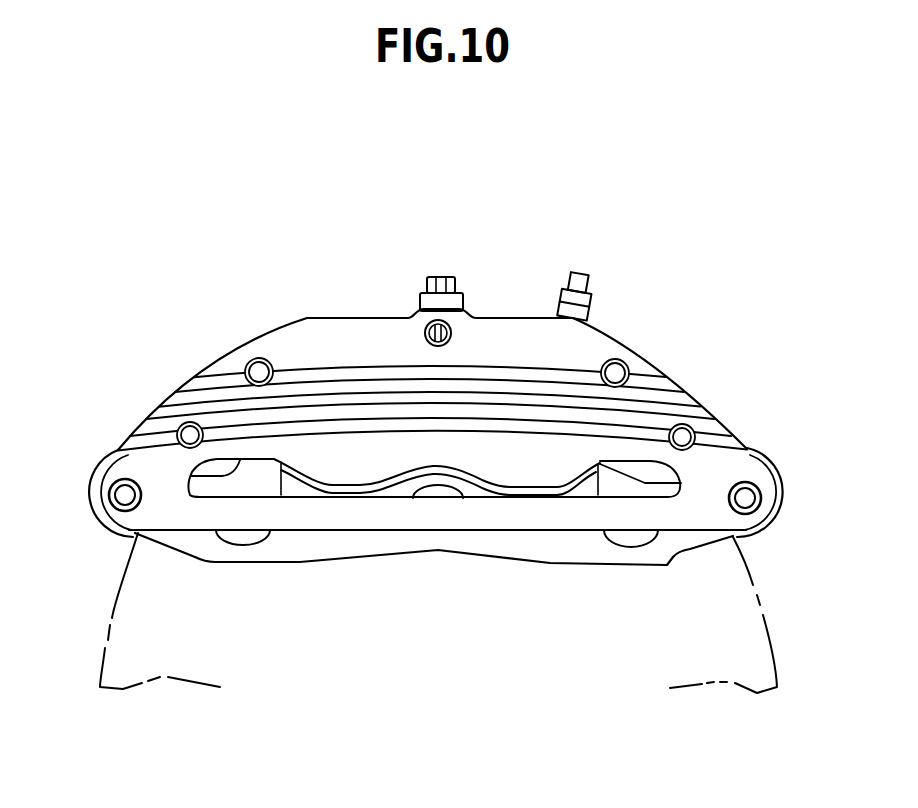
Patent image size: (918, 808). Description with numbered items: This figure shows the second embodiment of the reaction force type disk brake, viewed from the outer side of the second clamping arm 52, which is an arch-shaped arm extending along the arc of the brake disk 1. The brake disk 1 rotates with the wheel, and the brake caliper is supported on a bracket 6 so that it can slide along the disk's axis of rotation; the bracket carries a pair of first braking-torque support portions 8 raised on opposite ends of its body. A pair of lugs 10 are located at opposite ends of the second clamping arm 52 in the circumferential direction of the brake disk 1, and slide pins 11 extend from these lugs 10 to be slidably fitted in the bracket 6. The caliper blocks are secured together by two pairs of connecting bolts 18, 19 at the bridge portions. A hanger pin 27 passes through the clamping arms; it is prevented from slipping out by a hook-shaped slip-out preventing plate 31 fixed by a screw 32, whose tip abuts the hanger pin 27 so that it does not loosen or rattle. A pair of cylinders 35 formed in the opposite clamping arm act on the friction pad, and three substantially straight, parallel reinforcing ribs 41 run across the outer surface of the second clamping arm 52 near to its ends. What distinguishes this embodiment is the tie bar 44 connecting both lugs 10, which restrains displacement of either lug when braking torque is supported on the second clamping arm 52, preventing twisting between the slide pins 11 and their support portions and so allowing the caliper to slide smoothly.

The brake disk 1 is at (100, 657).
The bracket 6 is at (442, 560).
The first braking-torque support portions 8 is at (283, 459).
The lugs 10 is at (92, 472).
The slide pins 11 is at (123, 495).
The connecting bolts 18 is at (256, 365).
The connecting bolts 19 is at (184, 425).
The hanger pin 27 is at (425, 334).
The slip-out preventing plate 31 is at (326, 497).
The screw 32 is at (440, 275).
The cylinders 35 is at (375, 492).
The reinforcing ribs 41 is at (525, 377).
The tie bar 44 is at (383, 517).
The second clamping arm 52 is at (495, 333).